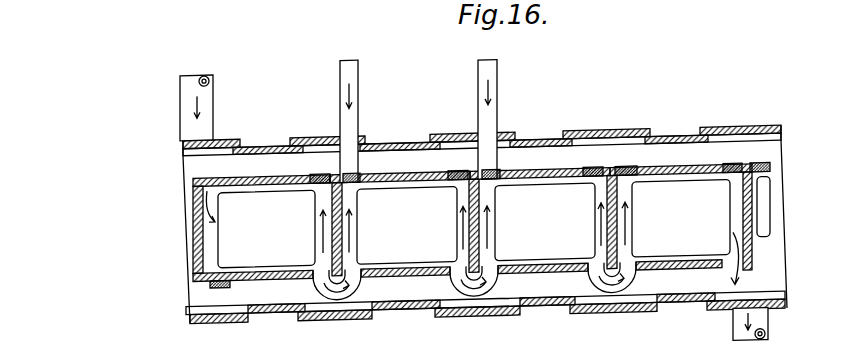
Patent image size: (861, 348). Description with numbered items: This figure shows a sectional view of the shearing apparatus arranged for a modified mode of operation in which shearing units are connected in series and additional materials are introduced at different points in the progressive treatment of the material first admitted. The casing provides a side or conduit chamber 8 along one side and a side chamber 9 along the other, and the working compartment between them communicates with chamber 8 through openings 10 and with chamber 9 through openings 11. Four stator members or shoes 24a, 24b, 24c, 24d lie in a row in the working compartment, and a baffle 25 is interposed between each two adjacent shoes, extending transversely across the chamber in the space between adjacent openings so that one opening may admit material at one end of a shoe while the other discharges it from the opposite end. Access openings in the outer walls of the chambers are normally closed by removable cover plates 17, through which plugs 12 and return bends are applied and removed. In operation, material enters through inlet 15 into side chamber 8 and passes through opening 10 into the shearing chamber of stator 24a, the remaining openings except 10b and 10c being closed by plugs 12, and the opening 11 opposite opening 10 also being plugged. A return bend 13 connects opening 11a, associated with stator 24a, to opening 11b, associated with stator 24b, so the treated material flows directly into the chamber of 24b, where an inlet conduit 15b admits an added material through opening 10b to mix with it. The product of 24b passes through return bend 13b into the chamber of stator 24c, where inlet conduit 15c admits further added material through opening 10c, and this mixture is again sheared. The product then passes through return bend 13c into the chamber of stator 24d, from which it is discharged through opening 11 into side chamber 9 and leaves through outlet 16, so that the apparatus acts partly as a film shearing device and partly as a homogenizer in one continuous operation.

The side chamber 8 is at (275, 166).
The side chamber 9 is at (773, 297).
The opening 10 is at (217, 175).
The opening 10b is at (363, 181).
The opening 10c is at (503, 180).
The opening 11 is at (207, 268).
The opening 11a is at (313, 292).
The opening 11b is at (380, 288).
The plug 12 is at (318, 178).
The return bend 13 is at (352, 307).
The return bend 13b is at (478, 306).
The return bend 13c is at (608, 306).
The inlet 15 is at (180, 88).
The inlet conduit 15b is at (357, 73).
The inlet conduit 15c is at (498, 76).
The outlet 16 is at (757, 333).
The cover plate 17 is at (454, 142).
The stator 24a is at (266, 229).
The stator 24b is at (407, 226).
The stator 24c is at (545, 222).
The stator 24d is at (681, 219).
The baffle 25 is at (202, 232).